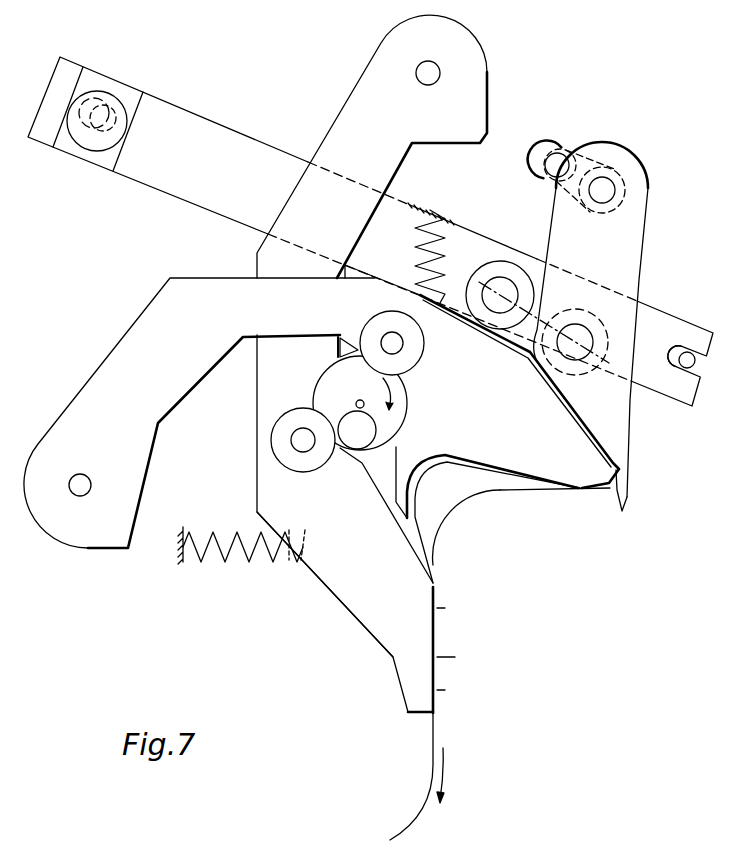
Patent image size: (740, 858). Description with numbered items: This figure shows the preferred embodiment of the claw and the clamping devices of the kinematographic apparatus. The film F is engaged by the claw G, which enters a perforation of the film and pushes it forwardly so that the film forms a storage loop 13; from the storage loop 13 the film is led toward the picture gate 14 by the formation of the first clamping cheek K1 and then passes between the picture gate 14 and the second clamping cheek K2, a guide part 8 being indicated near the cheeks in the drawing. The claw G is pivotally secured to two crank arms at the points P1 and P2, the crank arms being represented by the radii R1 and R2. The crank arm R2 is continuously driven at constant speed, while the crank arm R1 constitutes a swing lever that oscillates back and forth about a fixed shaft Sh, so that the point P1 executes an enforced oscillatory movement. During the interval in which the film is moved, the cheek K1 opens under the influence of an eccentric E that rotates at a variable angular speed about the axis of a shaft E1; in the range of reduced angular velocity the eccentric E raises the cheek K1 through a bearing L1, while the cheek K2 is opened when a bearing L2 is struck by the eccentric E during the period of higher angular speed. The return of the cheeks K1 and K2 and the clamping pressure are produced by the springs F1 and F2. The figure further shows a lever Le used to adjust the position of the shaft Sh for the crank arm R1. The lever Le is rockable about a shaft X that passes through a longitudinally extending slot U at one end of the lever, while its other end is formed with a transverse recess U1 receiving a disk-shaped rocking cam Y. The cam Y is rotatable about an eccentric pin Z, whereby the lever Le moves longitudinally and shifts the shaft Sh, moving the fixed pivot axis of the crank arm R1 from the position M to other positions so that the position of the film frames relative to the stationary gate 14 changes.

The lever Le is at (171, 110).
The transverse recess U1 is at (98, 80).
The rocking cam Y is at (95, 146).
The eccentric pin Z is at (98, 116).
The longitudinally extending slot U is at (674, 355).
The shaft X is at (693, 365).
The spring F1 is at (443, 240).
The fixed shaft Sh is at (491, 302).
The pivot point P1 is at (575, 347).
The crank arm R1 is at (508, 258).
The position of the fixed pivot axis M is at (517, 296).
The claw G is at (617, 262).
The film F is at (636, 494).
The crank arm R2 is at (590, 163).
The pivot point P2 is at (603, 190).
The eccentric E is at (353, 444).
The shaft E1 is at (356, 401).
The bearing L1 is at (402, 361).
The bearing L2 is at (282, 447).
The pawl A is at (342, 336).
The spring F2 is at (195, 561).
The first clamping cheek K1 is at (550, 468).
The storage loop 13 is at (437, 473).
The guide plate 8 is at (498, 492).
The second clamping cheek K2 is at (347, 590).
The picture gate 14 is at (441, 713).